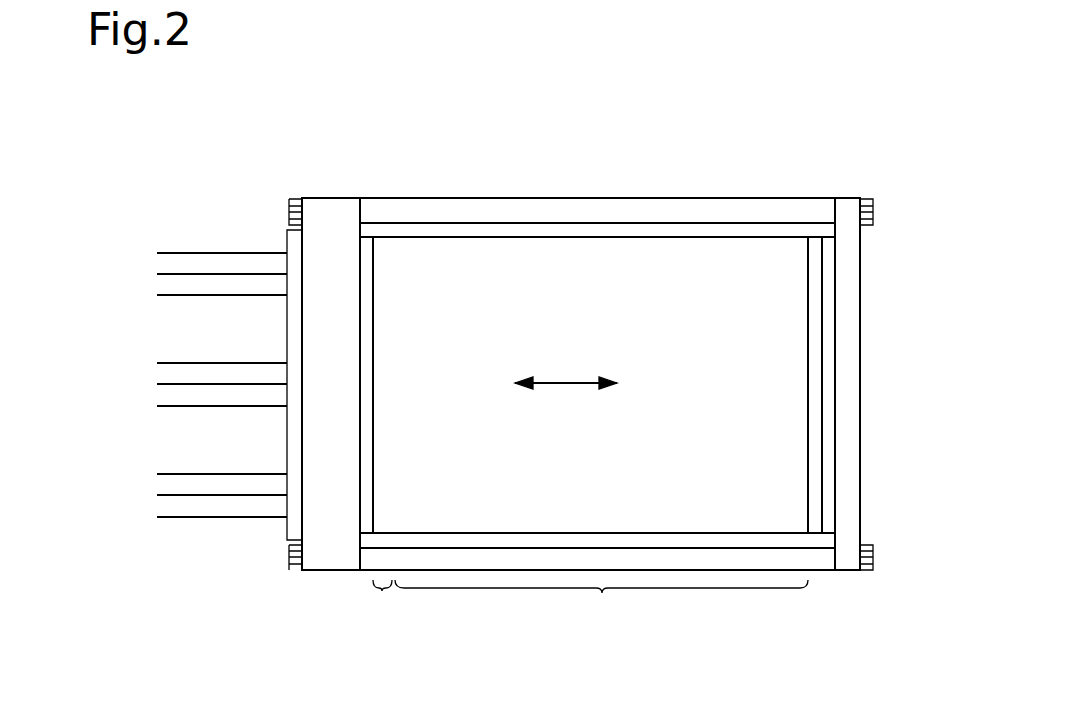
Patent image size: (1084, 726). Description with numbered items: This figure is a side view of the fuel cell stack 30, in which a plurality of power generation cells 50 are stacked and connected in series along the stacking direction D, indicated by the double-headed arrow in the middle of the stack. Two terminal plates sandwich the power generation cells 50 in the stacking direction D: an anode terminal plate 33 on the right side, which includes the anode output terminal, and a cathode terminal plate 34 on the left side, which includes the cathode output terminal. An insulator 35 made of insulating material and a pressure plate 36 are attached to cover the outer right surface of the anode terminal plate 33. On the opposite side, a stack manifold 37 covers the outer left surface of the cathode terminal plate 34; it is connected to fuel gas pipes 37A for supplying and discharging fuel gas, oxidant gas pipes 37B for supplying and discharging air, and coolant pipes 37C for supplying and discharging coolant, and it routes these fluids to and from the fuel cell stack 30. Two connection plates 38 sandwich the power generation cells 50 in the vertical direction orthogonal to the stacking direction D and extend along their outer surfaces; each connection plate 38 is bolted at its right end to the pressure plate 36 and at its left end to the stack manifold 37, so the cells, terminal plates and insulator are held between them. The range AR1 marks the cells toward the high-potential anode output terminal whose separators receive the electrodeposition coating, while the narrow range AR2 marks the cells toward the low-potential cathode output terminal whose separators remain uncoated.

The fuel cell stack 30 is at (861, 150).
The anode terminal plate 33 is at (813, 237).
The cathode terminal plate 34 is at (368, 228).
The insulator 35 is at (837, 273).
The pressure plate 36 is at (860, 373).
The stack manifold 37 is at (328, 210).
The fuel gas pipes 37A is at (232, 274).
The oxidant gas pipes 37B is at (232, 495).
The coolant pipes 37C is at (232, 384).
The connection plates 38 is at (455, 208).
The power generation cells 50 is at (648, 263).
The stacking direction D is at (565, 383).
The range toward the anode output terminal AR1 is at (601, 604).
The range toward the cathode output terminal AR2 is at (383, 605).